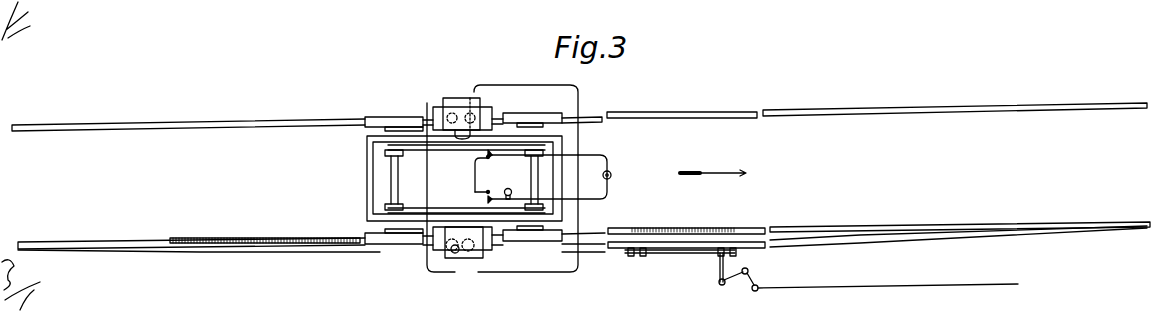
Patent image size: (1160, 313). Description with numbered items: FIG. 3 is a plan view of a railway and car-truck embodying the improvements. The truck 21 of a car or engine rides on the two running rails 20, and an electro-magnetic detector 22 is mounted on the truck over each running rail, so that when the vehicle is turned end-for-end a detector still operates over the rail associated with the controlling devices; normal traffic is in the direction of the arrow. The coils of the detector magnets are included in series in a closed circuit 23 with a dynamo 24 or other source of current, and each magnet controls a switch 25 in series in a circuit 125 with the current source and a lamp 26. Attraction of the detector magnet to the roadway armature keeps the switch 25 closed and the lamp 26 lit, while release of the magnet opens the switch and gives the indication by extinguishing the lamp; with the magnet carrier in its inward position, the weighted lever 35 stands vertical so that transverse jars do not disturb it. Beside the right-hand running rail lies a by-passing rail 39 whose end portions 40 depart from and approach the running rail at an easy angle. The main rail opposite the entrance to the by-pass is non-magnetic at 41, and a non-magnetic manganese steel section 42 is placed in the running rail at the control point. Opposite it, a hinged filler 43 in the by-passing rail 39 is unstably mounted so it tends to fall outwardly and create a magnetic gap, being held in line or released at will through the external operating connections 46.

The running rail 20 is at (118, 131).
The truck 21 is at (367, 176).
The electro-magnetic detector 22 is at (454, 104).
The closed circuit 23 is at (573, 94).
The dynamo 24 is at (612, 173).
The switch 25 is at (485, 200).
The lamp 26 is at (508, 188).
The weighted lever 35 is at (485, 156).
The by-passing rail 39 is at (868, 243).
The end portions 40 is at (290, 252).
The non-magnetic section 41 is at (276, 240).
The non-magnetic section 42 is at (695, 228).
The hinged filler 43 is at (677, 246).
The external operating connections 46 is at (816, 287).
The circuit 125 is at (583, 153).